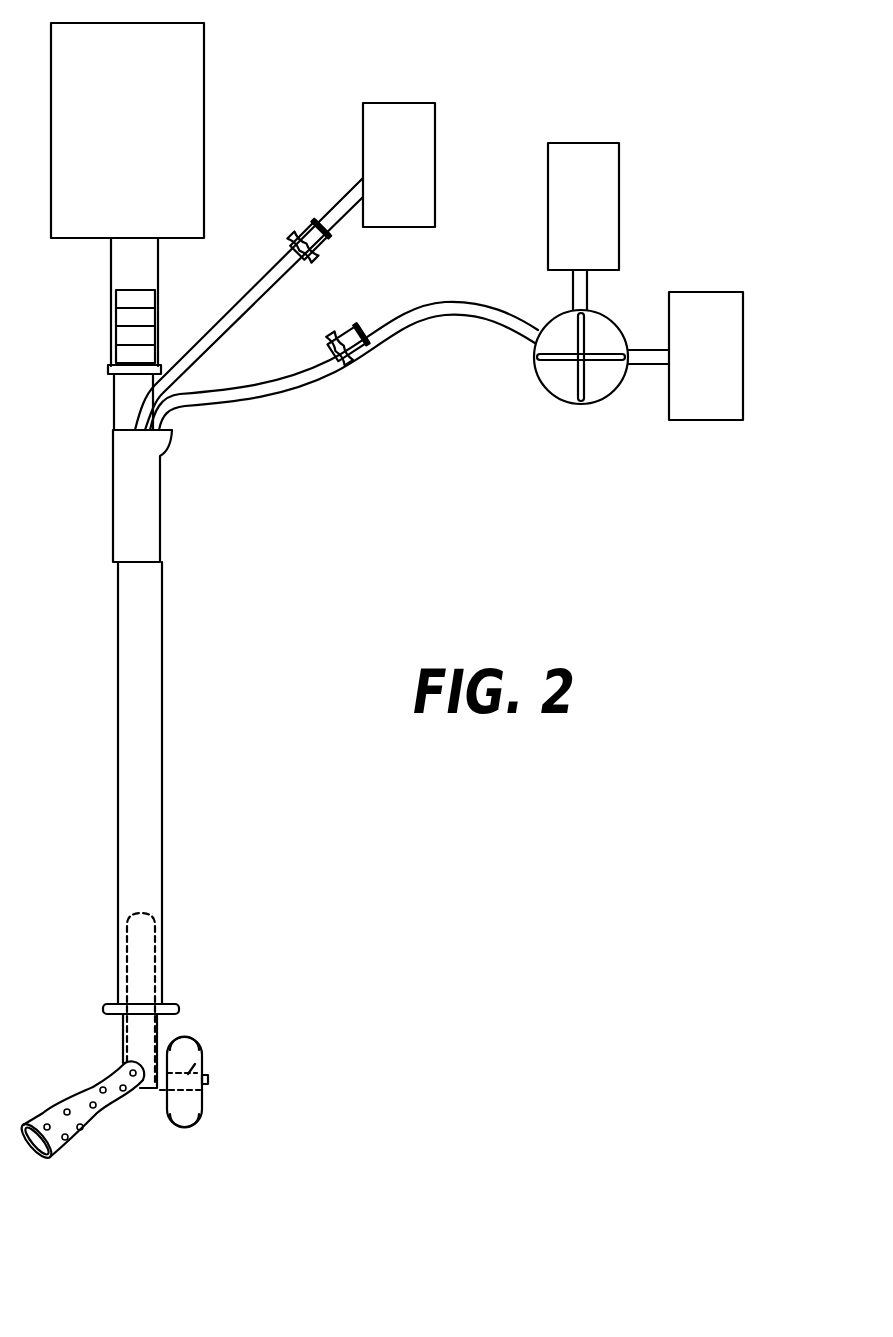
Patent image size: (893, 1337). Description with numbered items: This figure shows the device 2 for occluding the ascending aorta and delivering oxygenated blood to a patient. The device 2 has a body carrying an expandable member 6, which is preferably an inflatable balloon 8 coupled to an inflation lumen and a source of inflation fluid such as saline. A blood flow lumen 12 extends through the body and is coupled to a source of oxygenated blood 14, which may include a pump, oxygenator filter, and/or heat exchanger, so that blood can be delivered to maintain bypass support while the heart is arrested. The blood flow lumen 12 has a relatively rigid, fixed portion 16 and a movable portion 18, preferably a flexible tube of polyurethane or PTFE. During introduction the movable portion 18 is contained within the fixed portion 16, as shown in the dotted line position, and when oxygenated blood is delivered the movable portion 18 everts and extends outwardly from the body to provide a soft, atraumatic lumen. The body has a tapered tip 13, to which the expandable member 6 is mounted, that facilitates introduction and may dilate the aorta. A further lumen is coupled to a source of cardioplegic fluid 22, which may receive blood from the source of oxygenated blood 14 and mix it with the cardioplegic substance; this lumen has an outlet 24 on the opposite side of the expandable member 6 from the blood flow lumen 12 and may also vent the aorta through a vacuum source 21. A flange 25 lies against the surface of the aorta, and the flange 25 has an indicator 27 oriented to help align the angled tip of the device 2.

The device 2 is at (285, 588).
The expandable member 6 is at (181, 1128).
The inflatable balloon 8 is at (200, 1113).
The blood flow lumen 12 is at (425, 118).
The tapered tip 13 is at (210, 1042).
The source of oxygenated blood 14 is at (190, 60).
The fixed portion 16 is at (163, 960).
The movable portion 18 is at (127, 912).
The vacuum source 21 is at (608, 198).
The source of cardioplegic fluid 22 is at (728, 383).
The outlet 24 is at (210, 1080).
The flange 25 is at (108, 1003).
The indicator 27 is at (170, 1002).